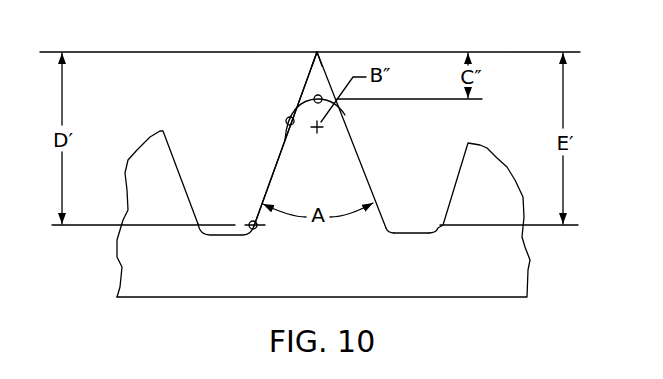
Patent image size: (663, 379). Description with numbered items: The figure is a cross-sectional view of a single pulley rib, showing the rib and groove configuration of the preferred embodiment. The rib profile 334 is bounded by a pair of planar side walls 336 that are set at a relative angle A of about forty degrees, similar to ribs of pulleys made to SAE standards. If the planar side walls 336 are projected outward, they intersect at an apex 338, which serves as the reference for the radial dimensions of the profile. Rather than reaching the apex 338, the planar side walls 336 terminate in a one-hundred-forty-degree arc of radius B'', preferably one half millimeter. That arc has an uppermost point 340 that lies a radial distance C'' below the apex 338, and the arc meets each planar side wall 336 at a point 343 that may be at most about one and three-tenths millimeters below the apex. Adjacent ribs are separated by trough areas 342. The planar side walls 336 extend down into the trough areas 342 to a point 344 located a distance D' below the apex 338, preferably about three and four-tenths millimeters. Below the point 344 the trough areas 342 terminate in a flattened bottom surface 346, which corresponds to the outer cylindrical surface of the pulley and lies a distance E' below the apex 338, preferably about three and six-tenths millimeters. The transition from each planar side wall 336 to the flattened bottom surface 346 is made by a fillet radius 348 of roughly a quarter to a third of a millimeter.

The rib profile 334 is at (276, 127).
The planar side walls 336 is at (279, 152).
The apex 338 is at (317, 52).
The uppermost point 340 is at (315, 95).
The trough areas 342 is at (229, 220).
The point 343 is at (293, 124).
The point 344 is at (256, 230).
The flattened bottom surface 346 is at (413, 235).
The fillet radius 348 is at (399, 225).